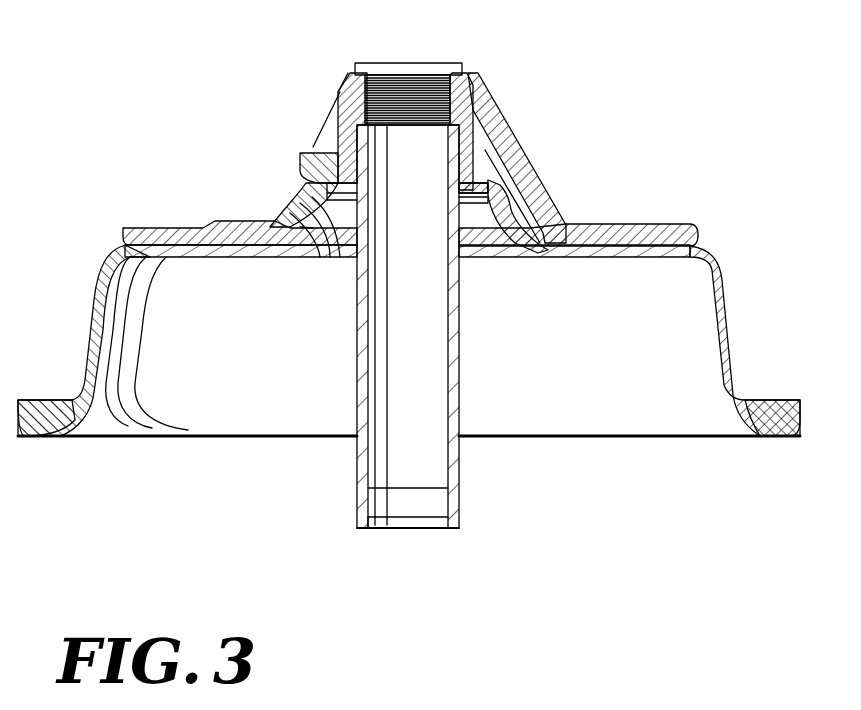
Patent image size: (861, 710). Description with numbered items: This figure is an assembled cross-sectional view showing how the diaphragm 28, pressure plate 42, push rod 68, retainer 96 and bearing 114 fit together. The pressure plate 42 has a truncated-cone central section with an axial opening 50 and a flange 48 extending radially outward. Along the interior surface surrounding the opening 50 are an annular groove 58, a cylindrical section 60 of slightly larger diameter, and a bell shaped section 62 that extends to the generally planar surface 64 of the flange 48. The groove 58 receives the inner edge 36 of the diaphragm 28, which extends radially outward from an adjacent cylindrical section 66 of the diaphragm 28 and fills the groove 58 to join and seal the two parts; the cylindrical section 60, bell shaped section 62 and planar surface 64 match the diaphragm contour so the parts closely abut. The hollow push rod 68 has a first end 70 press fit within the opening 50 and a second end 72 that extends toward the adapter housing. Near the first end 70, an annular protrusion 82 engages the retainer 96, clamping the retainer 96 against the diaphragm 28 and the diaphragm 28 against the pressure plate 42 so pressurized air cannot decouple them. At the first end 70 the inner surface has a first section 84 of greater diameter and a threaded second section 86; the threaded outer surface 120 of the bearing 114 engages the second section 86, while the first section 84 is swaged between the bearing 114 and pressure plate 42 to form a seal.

The diaphragm 28 is at (727, 320).
The inner edge 36 is at (463, 170).
The pressure plate 42 is at (478, 90).
The flange 48 is at (667, 224).
The axial opening 50 is at (470, 95).
The annular groove 58 is at (470, 147).
The cylindrical section 60 is at (490, 180).
The bell shaped section 62 is at (495, 212).
The planar surface 64 is at (565, 236).
The cylindrical section 66 is at (303, 162).
The push rod 68 is at (456, 422).
The first end 70 is at (352, 88).
The second end 72 is at (358, 466).
The annular protrusion 82 is at (338, 257).
The first section 84 is at (445, 72).
The second section 86 is at (446, 112).
The retainer 96 is at (317, 257).
The bearing 114 is at (379, 63).
The threaded outer surface 120 is at (360, 100).